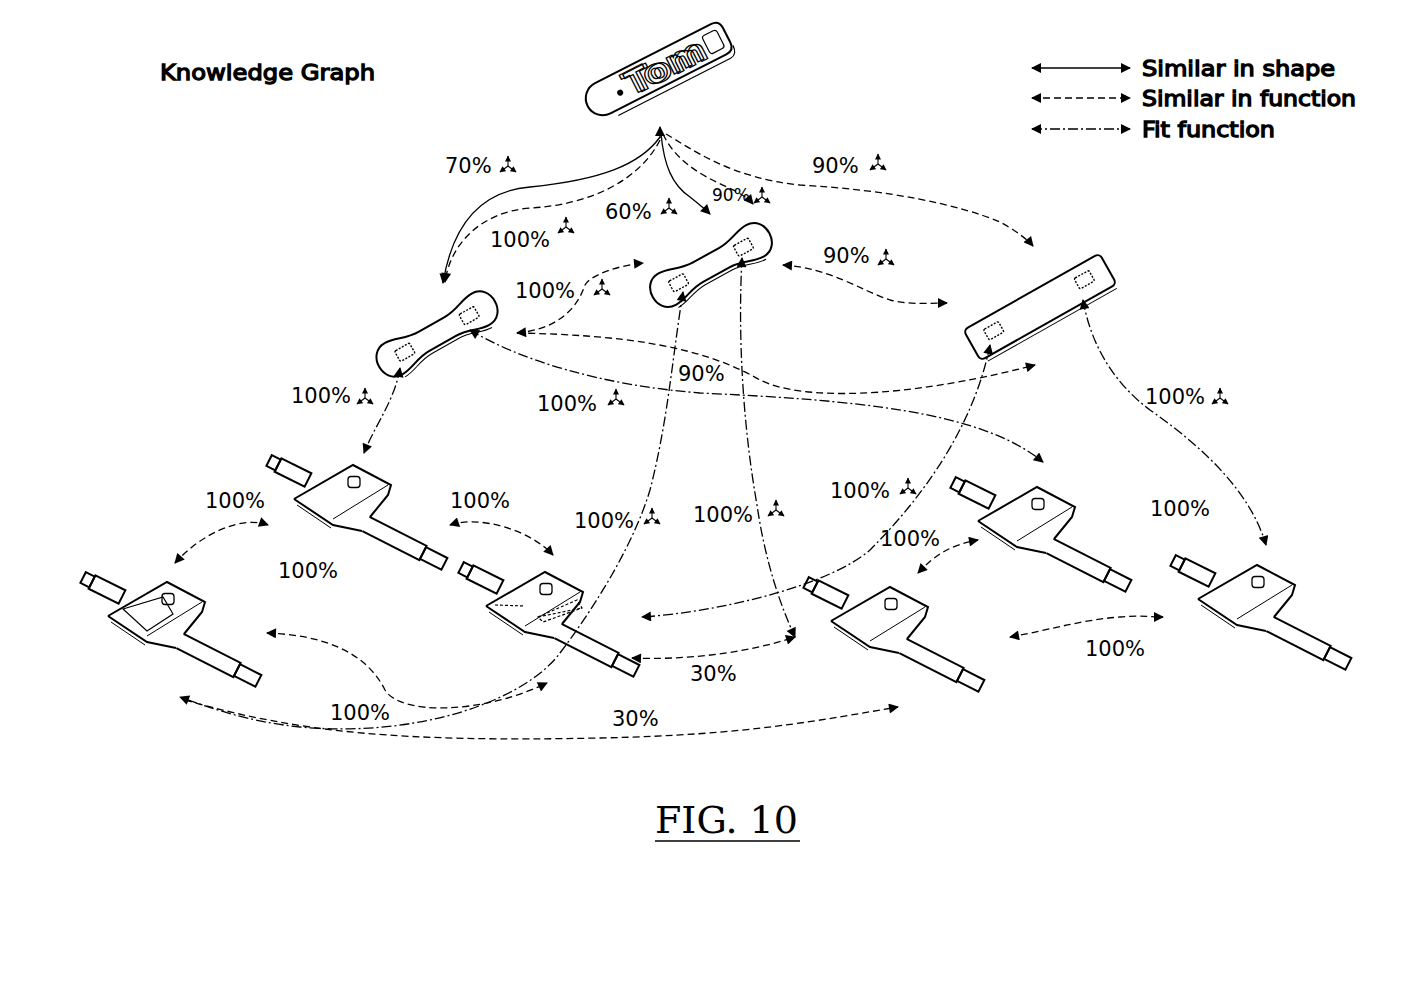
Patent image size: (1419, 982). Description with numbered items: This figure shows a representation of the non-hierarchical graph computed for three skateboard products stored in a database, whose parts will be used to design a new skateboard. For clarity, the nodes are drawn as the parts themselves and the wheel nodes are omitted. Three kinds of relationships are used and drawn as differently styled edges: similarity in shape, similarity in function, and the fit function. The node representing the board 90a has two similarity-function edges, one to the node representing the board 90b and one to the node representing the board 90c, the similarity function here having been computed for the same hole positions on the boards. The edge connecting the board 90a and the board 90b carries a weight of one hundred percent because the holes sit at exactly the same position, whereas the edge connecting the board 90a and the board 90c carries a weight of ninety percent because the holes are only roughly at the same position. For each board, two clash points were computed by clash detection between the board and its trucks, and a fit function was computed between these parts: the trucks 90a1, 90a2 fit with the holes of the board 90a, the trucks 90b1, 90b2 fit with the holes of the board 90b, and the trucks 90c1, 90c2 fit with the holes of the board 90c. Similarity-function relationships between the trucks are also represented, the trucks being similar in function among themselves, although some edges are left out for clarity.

The board 90a is at (403, 342).
The board 90b is at (740, 258).
The board 90c is at (1103, 275).
The truck 90a1 is at (333, 480).
The truck 90b1 is at (155, 582).
The truck 90c1 is at (493, 606).
The truck 90a2 is at (1053, 498).
The truck 90b2 is at (925, 600).
The truck 90c2 is at (1273, 575).